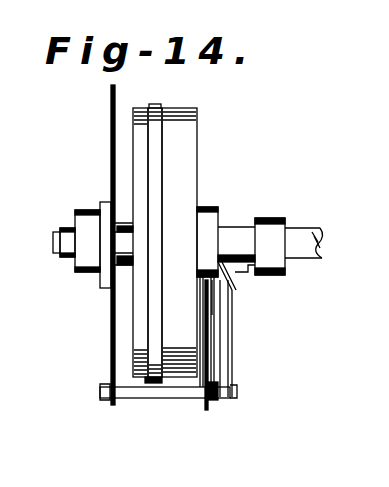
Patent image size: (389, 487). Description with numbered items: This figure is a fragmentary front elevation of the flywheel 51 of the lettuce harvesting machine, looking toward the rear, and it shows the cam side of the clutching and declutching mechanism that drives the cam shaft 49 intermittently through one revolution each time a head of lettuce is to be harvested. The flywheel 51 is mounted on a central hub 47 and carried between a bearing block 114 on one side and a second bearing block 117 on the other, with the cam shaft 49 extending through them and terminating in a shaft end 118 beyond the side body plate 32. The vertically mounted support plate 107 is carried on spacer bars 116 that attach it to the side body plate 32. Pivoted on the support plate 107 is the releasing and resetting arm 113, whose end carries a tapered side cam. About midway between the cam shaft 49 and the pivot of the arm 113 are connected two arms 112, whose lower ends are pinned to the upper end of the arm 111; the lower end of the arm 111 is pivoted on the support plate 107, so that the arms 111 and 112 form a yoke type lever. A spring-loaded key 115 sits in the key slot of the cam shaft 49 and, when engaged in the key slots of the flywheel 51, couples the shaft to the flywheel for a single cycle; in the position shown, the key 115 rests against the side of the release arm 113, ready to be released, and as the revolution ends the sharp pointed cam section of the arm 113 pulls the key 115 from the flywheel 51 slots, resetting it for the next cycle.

The side body plate 32 is at (111, 118).
The hub 47 is at (156, 107).
The flywheel 51 is at (198, 120).
The bearing block 114 is at (208, 207).
The bearing block 117 is at (277, 217).
The cam shaft 49 is at (300, 228).
The spring-loaded key 115 is at (240, 278).
The releasing and resetting arm 113 is at (240, 290).
The arms 112 is at (240, 302).
The arm 111 is at (232, 345).
The shaft end 118 is at (82, 278).
The spacer bars 116 is at (152, 399).
The support plate 107 is at (208, 410).